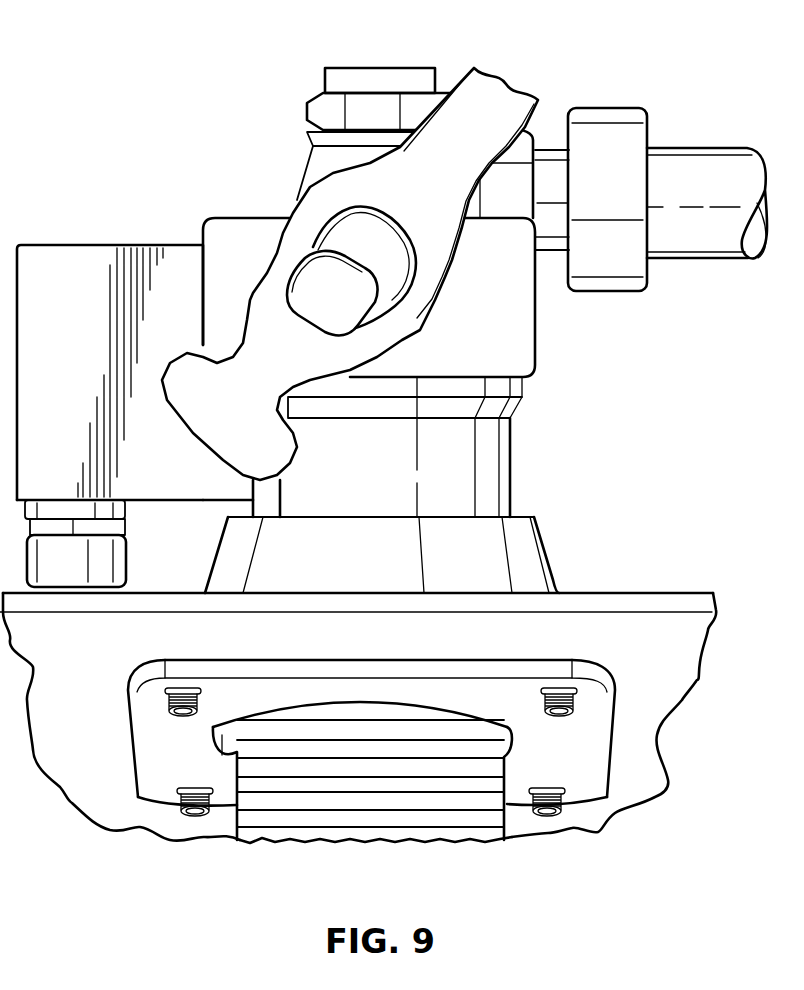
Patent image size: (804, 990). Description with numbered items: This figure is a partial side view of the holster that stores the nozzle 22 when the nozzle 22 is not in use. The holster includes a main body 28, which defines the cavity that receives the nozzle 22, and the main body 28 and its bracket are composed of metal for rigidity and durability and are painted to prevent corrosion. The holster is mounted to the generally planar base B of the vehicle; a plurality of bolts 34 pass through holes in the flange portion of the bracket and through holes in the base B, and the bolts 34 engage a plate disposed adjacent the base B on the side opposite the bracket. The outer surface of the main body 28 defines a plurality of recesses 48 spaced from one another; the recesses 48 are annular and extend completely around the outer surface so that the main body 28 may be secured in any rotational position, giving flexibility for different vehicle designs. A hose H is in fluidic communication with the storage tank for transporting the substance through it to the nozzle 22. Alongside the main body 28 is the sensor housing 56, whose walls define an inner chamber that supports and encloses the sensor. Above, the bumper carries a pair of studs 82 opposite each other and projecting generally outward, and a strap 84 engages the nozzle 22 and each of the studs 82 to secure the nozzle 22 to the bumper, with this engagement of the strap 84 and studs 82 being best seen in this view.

The nozzle 22 is at (354, 68).
The strap 84 is at (460, 83).
The stud 82 is at (302, 268).
The sensor housing 56 is at (42, 247).
The main body 28 is at (530, 465).
The hose H is at (685, 147).
The base B is at (679, 593).
The recesses 48 is at (513, 768).
The bolts 34 is at (183, 716).